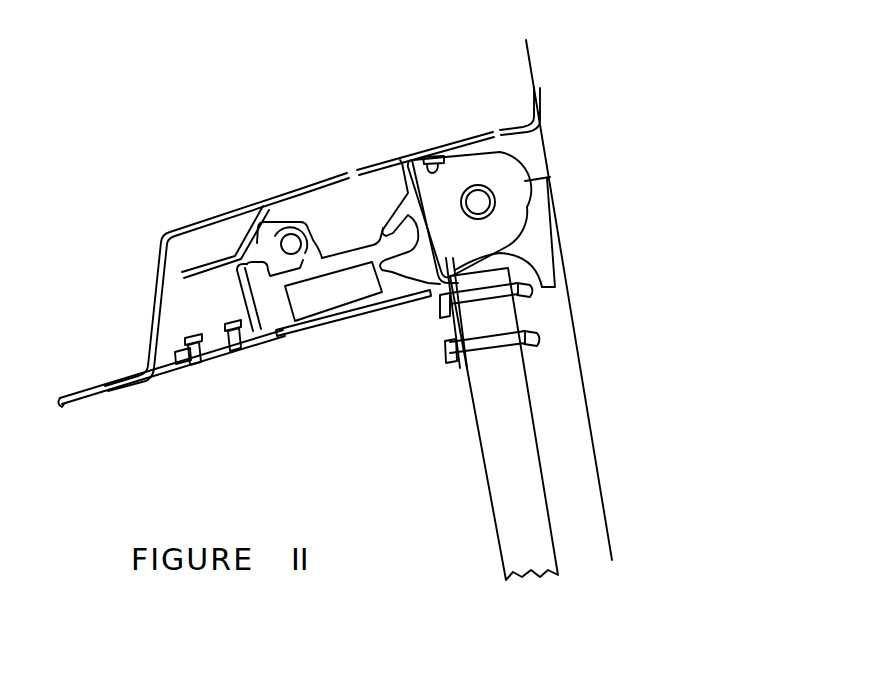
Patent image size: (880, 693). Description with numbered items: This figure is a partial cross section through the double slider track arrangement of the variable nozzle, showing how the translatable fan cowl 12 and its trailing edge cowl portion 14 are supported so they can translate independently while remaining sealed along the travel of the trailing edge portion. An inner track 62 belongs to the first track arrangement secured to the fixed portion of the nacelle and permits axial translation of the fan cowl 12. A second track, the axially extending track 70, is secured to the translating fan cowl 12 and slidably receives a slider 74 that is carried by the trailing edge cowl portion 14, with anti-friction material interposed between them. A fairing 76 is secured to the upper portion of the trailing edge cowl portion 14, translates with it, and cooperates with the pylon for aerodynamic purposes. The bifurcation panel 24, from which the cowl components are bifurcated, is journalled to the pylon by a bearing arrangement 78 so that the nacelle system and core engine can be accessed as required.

The fan cowl 12 is at (377, 324).
The trailing edge cowl portion 14 is at (163, 380).
The bifurcation panel 24 is at (488, 478).
The inner track 62 is at (397, 200).
The axially extending track 70 is at (283, 228).
The slider 74 is at (289, 234).
The fairing 76 is at (183, 224).
The bearing arrangement 78 is at (516, 178).